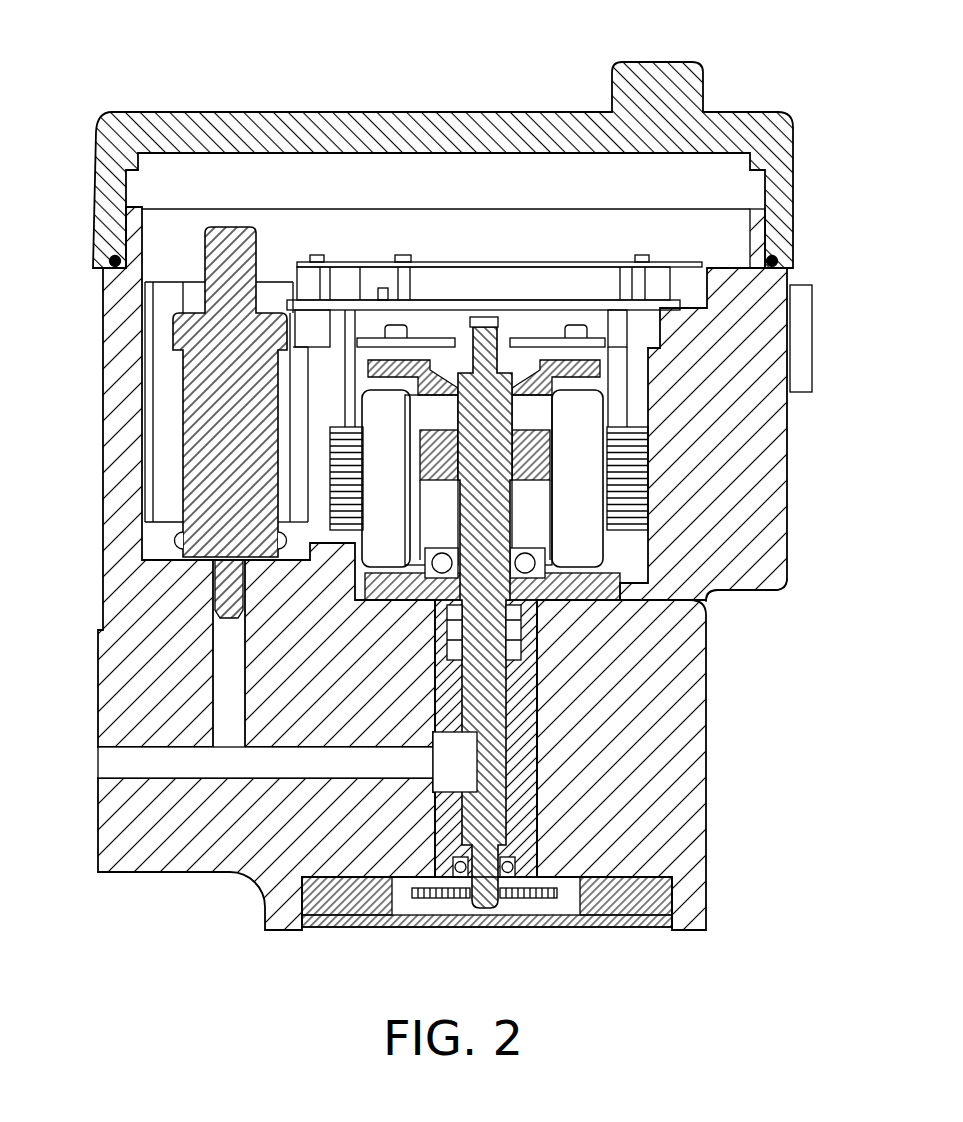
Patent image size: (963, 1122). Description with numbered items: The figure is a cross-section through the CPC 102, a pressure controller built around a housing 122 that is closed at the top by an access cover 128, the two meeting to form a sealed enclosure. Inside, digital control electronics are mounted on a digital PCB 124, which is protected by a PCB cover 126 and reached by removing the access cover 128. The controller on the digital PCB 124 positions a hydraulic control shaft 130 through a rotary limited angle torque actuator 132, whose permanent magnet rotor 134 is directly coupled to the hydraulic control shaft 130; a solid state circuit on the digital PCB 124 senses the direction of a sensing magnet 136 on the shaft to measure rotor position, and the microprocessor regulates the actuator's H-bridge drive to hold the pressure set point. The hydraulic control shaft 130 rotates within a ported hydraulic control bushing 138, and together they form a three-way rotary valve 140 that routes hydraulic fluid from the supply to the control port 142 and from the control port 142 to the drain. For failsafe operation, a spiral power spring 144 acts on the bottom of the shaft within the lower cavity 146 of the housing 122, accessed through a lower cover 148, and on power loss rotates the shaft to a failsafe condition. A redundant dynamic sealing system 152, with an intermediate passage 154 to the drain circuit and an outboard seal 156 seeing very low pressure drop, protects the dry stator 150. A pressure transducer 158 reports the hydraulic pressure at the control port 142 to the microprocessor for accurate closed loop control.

The CPC 102 is at (160, 68).
The housing 122 is at (110, 590).
The digital printed circuit board (PCB) 124 is at (620, 306).
The PCB cover 126 is at (693, 258).
The access cover 128 is at (730, 120).
The hydraulic control shaft 130 is at (543, 472).
The rotary limited angle torque (LAT) actuator 132 is at (706, 543).
The permanent magnet rotor 134 is at (648, 455).
The sensing magnet 136 is at (485, 315).
The hydraulic control bushing 138 is at (530, 755).
The three-way rotary valve 140 is at (640, 786).
The control port 142 is at (106, 763).
The spiral power spring 144 is at (538, 900).
The lower cavity 146 is at (400, 900).
The lower cover 148 is at (320, 925).
The dry stator 150 is at (537, 507).
The redundant dynamic sealing system 152 is at (560, 623).
The intermediate passage 154 is at (525, 645).
The outboard seal 156 is at (540, 606).
The pressure transducer 158 is at (205, 425).